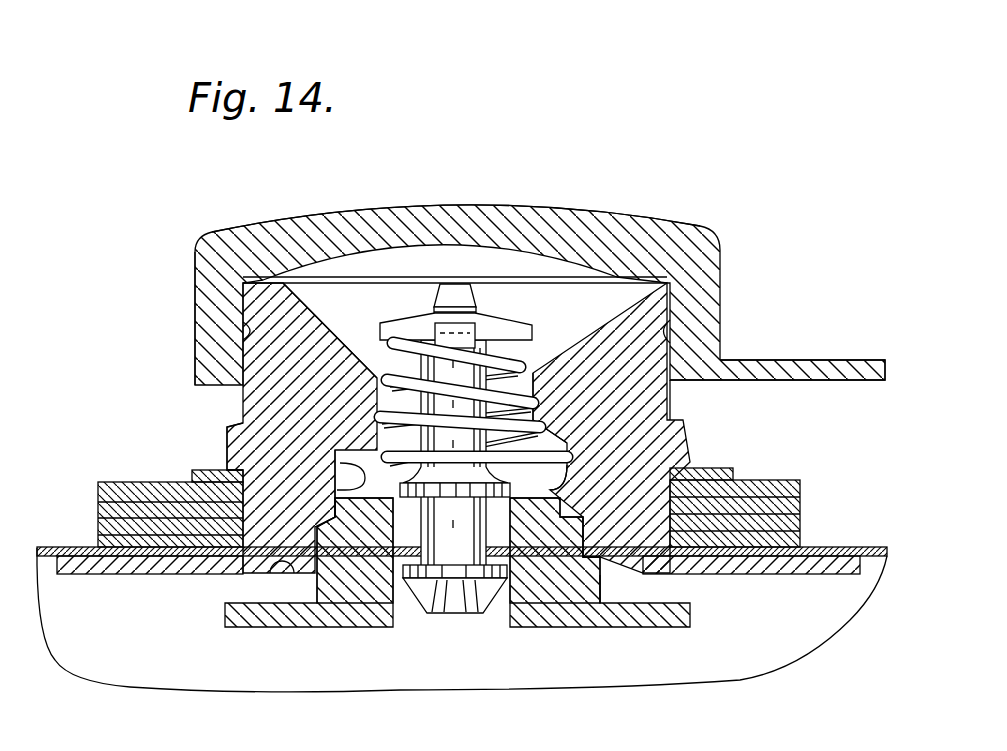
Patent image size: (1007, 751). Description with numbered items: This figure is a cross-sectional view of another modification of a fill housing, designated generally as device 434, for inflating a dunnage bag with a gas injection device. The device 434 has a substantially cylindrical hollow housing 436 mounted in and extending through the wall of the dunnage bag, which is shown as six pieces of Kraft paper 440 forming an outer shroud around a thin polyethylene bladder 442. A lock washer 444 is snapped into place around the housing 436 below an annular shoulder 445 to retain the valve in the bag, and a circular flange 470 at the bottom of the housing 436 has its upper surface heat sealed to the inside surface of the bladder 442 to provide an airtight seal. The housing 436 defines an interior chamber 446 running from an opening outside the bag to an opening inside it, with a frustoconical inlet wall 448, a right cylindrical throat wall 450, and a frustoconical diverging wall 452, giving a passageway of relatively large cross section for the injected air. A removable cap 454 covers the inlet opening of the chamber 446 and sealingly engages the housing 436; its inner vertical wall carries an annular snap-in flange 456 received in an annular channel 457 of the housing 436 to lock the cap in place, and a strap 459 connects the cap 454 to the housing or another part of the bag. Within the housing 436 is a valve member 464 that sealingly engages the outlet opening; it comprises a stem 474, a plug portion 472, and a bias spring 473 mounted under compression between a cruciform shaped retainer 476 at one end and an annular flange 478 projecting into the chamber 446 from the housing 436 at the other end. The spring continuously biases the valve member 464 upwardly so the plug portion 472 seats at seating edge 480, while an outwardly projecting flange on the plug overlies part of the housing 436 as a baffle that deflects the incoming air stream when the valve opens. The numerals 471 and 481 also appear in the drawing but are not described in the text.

The fill housing device 434 is at (160, 365).
The housing 436 is at (668, 400).
The Kraft paper 440 is at (810, 485).
The polyethylene bladder 442 is at (850, 550).
The lock washer 444 is at (213, 470).
The annular shoulder 445 is at (227, 455).
The interior chamber 446 is at (391, 301).
The inlet wall 448 is at (603, 295).
The throat wall 450 is at (562, 361).
The diverging wall 452 is at (579, 408).
The removable cap 454 is at (328, 224).
The annular snap-in flange 456 is at (250, 325).
The annular channel 457 is at (316, 293).
The strap 459 is at (805, 370).
The valve member 464 is at (314, 651).
The circular flange 470 is at (833, 570).
The lower plate 471 is at (662, 623).
The plug portion 472 is at (602, 583).
The bias spring 473 is at (355, 550).
The stem 474 is at (452, 620).
The cruciform shaped retainer 476 is at (503, 323).
The annular flange 478 is at (313, 437).
The seating edge 480 is at (552, 465).
The clearance 481 is at (282, 562).